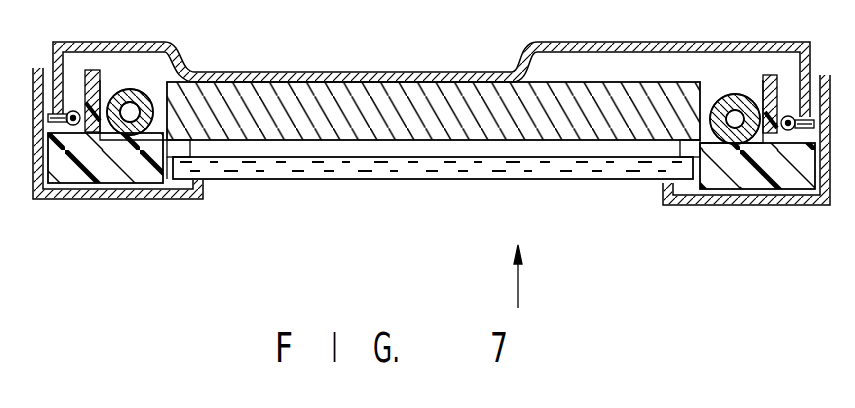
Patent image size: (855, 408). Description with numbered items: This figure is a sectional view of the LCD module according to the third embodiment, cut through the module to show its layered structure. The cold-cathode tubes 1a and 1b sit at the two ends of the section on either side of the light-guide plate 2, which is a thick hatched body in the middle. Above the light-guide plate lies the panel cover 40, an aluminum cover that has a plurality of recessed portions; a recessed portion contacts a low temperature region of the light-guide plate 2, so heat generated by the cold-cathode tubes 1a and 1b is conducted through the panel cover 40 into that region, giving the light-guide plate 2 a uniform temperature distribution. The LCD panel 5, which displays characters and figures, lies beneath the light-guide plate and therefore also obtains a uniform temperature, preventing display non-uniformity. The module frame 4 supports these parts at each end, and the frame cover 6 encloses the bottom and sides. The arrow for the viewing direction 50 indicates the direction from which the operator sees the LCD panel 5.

The cold-cathode tube 1a is at (738, 94).
The cold-cathode tube 1b is at (130, 89).
The light-guide plate 2 is at (475, 82).
The module frame 4 is at (77, 153).
The LCD panel 5 is at (399, 175).
The frame cover 6 is at (128, 197).
The panel cover 40 is at (309, 71).
The viewing direction 50 is at (521, 285).